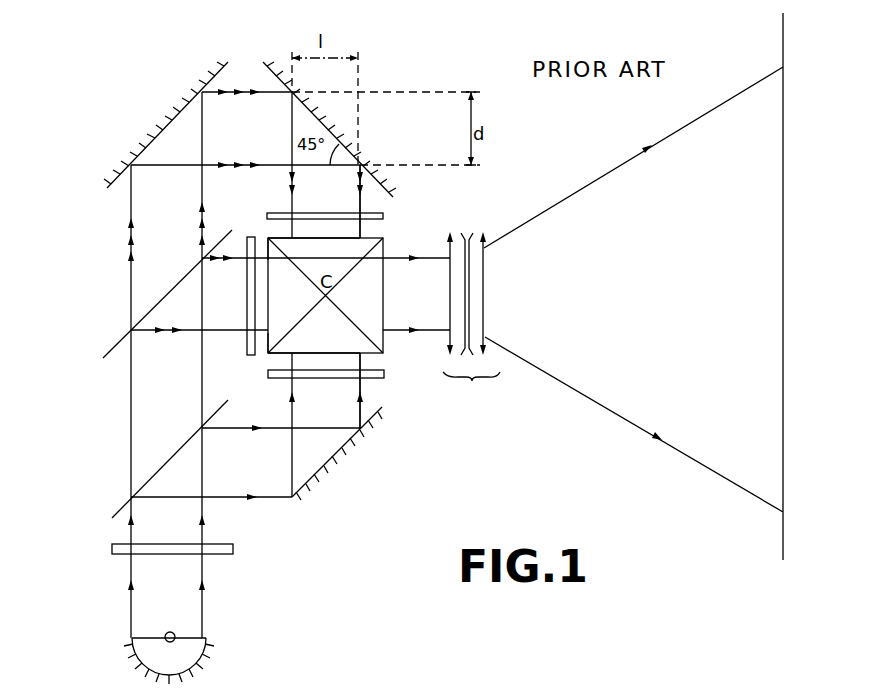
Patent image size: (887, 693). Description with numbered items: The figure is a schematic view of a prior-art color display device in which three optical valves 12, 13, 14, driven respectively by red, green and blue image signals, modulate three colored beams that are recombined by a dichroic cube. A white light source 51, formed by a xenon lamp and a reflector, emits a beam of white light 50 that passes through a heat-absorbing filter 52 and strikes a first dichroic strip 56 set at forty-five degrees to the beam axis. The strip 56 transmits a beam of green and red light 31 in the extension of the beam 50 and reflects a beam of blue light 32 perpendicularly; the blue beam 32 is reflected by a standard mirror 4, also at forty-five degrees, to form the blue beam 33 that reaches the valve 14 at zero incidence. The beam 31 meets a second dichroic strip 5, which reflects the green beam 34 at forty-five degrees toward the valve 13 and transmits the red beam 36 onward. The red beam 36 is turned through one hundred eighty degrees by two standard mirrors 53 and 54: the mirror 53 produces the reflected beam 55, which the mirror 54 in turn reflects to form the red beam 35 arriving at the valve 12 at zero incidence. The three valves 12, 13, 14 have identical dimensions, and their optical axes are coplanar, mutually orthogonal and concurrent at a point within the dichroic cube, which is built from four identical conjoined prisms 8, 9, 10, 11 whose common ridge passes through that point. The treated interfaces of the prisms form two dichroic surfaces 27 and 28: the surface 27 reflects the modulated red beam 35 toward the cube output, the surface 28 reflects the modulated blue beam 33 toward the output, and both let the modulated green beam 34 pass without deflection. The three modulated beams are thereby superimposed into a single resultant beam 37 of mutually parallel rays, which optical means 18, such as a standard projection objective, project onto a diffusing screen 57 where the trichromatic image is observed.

The standard mirror 4 is at (352, 453).
The second dichroic strip 5 is at (117, 345).
The prism 8 is at (313, 243).
The prism 9 is at (275, 298).
The prism 10 is at (310, 343).
The prism 11 is at (385, 240).
The optical valve 12 is at (327, 213).
The optical valve 13 is at (247, 284).
The optical valve 14 is at (325, 378).
The optical means 18 is at (473, 378).
The dichroic surface 27 is at (270, 236).
The dichroic surface 28 is at (268, 352).
The beam of green and red light 31 is at (131, 430).
The beam of blue light 32 is at (271, 500).
The blue light beam 33 is at (362, 392).
The green light beam 34 is at (148, 332).
The red light beam 35 is at (361, 195).
The beam of red light 36 is at (131, 276).
The resultant beam 37 is at (405, 333).
The beam of white light 50 is at (131, 530).
The white light source 51 is at (247, 605).
The heat-absorbing filter 52 is at (233, 550).
The standard mirror 53 is at (168, 163).
The standard mirror 54 is at (365, 163).
The reflected beam 55 is at (250, 90).
The first dichroic strip 56 is at (131, 497).
The diffusing screen 57 is at (783, 528).